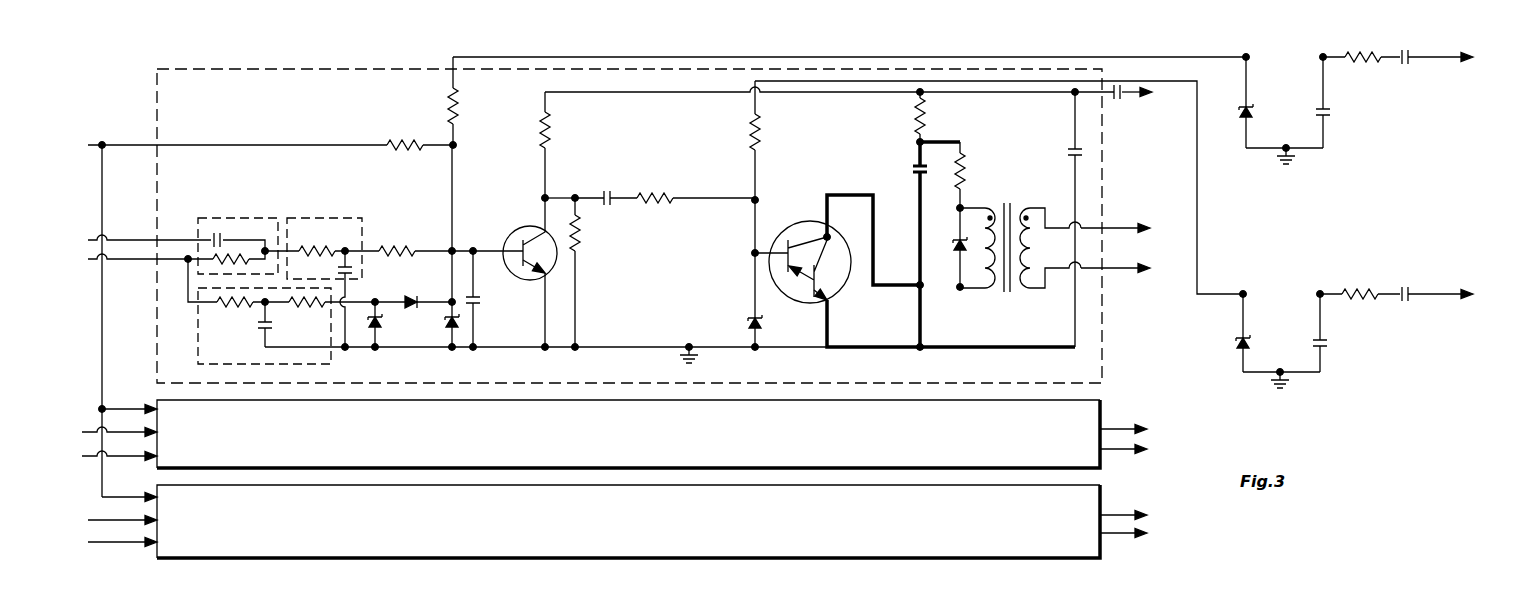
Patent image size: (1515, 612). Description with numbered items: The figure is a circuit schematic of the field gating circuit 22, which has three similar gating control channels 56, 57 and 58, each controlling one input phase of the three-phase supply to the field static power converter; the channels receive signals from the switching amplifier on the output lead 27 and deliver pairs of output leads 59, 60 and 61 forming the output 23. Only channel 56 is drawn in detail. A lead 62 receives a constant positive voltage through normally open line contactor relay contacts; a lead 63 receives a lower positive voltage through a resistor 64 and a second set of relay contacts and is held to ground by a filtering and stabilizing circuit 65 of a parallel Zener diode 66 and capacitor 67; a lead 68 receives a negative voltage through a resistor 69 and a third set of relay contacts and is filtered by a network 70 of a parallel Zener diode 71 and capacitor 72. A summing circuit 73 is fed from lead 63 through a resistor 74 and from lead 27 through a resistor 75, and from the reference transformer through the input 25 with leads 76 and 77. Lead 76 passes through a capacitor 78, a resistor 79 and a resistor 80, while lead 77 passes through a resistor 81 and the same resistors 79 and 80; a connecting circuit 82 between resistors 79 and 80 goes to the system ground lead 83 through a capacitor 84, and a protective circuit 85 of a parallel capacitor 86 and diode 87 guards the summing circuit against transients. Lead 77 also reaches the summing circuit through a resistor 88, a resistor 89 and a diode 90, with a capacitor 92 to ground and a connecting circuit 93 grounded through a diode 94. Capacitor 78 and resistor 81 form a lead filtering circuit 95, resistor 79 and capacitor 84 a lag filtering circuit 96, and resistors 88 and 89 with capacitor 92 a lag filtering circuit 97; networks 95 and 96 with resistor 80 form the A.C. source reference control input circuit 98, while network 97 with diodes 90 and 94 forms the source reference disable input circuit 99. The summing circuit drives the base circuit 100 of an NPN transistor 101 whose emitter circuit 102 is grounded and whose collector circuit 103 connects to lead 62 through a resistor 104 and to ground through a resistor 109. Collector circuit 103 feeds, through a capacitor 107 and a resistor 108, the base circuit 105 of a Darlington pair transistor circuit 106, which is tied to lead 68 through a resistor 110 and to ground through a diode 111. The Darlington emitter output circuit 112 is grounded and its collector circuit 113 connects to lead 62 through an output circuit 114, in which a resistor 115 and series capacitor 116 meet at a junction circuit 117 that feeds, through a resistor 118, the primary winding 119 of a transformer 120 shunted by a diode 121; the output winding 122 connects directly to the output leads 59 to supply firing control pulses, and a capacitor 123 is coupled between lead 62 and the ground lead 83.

The field gating circuit 22 is at (1137, 567).
The output 23 is at (1127, 221).
The input 25 is at (92, 230).
The output lead 27 is at (102, 140).
The gating control channel 56 is at (350, 67).
The gating control channel 57 is at (170, 400).
The gating control channel 58 is at (185, 558).
The output leads 59 is at (1145, 270).
The output leads 60 is at (1138, 451).
The output leads 61 is at (1141, 531).
The lead 62 is at (614, 92).
The lead 63 is at (621, 55).
The resistor 64 is at (1365, 55).
The filtering and stabilizing circuit 65 is at (1350, 134).
The Zener diode 66 is at (1251, 115).
The capacitor 67 is at (1334, 110).
The lead 68 is at (1186, 83).
The resistor 69 is at (1360, 290).
The stabilizing and filtering network 70 is at (1336, 371).
The Zener diode 71 is at (1235, 344).
The capacitor 72 is at (1328, 344).
The summing circuit 73 is at (456, 246).
The resistor 74 is at (462, 108).
The resistor 75 is at (404, 142).
The input lead 76 is at (150, 240).
The input lead 77 is at (148, 262).
The capacitor 78 is at (225, 240).
The resistor 79 is at (312, 249).
The resistor 80 is at (401, 243).
The resistor 81 is at (220, 260).
The connecting circuit 82 is at (368, 252).
The system ground lead 83 is at (622, 348).
The capacitor 84 is at (340, 270).
The protective circuit 85 is at (490, 308).
The capacitor 86 is at (480, 300).
The diode 87 is at (448, 328).
The resistor 88 is at (244, 306).
The resistor 89 is at (288, 308).
The diode 90 is at (409, 306).
The capacitor 92 is at (263, 328).
The connecting circuit 93 is at (375, 300).
The diode 94 is at (377, 329).
The lead filtering circuit 95 is at (255, 216).
The lag filtering circuit 96 is at (343, 218).
The lag filtering circuit 97 is at (196, 340).
The A.C. source reference control input circuit 98 is at (433, 233).
The source reference disable input circuit 99 is at (423, 298).
The base circuit 100 is at (505, 238).
The NPN type transistor 101 is at (546, 276).
The emitter circuit 102 is at (546, 306).
The collector circuit 103 is at (545, 198).
The resistor 104 is at (544, 136).
The base circuit 105 is at (770, 250).
The Darlington pair type transistor circuit 106 is at (838, 281).
The capacitor 107 is at (610, 196).
The resistor 108 is at (655, 197).
The resistor 109 is at (585, 246).
The resistor 110 is at (765, 132).
The diode 111 is at (744, 320).
The emitter output circuit 112 is at (828, 324).
The collector circuit 113 is at (839, 194).
The output circuit 114 is at (1006, 144).
The resistor 115 is at (931, 115).
The capacitor 116 is at (918, 167).
The junction circuit 117 is at (918, 143).
The resistor 118 is at (968, 165).
The primary winding 119 is at (977, 248).
The transformer 120 is at (1008, 203).
The diode 121 is at (955, 248).
The output winding 122 is at (1050, 248).
The capacitor 123 is at (1072, 160).